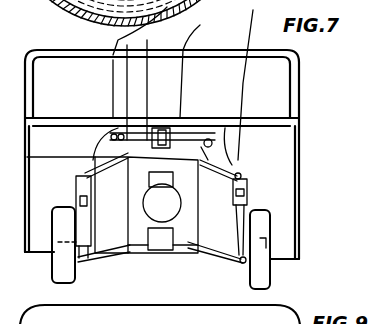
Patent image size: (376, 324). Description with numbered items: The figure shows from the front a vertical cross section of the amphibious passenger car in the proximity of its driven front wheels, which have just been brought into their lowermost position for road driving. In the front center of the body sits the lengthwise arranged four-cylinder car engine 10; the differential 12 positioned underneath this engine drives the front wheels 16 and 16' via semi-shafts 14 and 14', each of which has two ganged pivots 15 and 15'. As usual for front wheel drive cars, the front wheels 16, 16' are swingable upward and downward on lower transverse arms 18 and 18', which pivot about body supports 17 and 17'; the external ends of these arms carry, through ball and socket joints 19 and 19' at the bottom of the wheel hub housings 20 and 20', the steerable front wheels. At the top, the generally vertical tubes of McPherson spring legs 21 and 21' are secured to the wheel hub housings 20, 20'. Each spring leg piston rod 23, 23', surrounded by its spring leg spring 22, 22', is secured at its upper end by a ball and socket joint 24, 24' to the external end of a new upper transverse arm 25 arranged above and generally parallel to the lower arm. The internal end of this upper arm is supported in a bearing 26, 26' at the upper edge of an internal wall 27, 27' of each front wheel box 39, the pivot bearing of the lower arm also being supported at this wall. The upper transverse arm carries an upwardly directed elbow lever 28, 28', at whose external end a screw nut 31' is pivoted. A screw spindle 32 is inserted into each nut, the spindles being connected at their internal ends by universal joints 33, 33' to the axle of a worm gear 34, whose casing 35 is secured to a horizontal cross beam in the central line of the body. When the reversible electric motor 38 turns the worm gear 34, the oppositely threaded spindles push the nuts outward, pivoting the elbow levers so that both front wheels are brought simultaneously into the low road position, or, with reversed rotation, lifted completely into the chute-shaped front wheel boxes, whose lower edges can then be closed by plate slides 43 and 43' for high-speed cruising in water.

The passenger car front engine 10 is at (170, 211).
The differential 12 is at (155, 249).
The semi-shaft 14 is at (218, 235).
The semi-shaft 14' is at (119, 275).
The ganged pivot 15 is at (154, 280).
The ganged pivot 15' is at (158, 236).
The front wheel 16 is at (279, 255).
The front wheel 16' is at (51, 253).
The body support 17 is at (169, 280).
The body support 17' is at (117, 226).
The transverse arm 18 is at (191, 269).
The transverse arm 18' is at (95, 277).
The ball and socket joint 19 is at (234, 283).
The ball and socket joint 19' is at (99, 293).
The wheel hub housing 20 is at (283, 218).
The wheel hub housing 20' is at (59, 217).
The spring leg 21 is at (219, 219).
The spring leg 21' is at (42, 146).
The spring leg spring 22 is at (327, 175).
The spring leg spring 22' is at (56, 178).
The spring leg piston rod 23 is at (295, 159).
The spring leg piston rod 23' is at (69, 127).
The ball and socket joint 24 is at (305, 150).
The ball and socket joint 24' is at (49, 122).
The upper transverse arm 25 is at (245, 175).
The bearing 26 is at (291, 123).
The bearing 26' is at (87, 112).
The internal wall 27 is at (209, 195).
The internal wall 27' is at (139, 164).
The elbow lever 28 is at (227, 113).
The elbow lever 28' is at (107, 115).
The screw nut 31' is at (70, 39).
The screw spindle 32 is at (188, 143).
The universal joint 33 is at (190, 99).
The universal joint 33' is at (157, 39).
The worm gear 34 is at (138, 108).
The worm gear casing 35 is at (181, 145).
The electric motor 38 is at (138, 140).
The front wheel box 39 is at (281, 204).
The plate slide 43 is at (329, 266).
The plate slide 43' is at (39, 244).